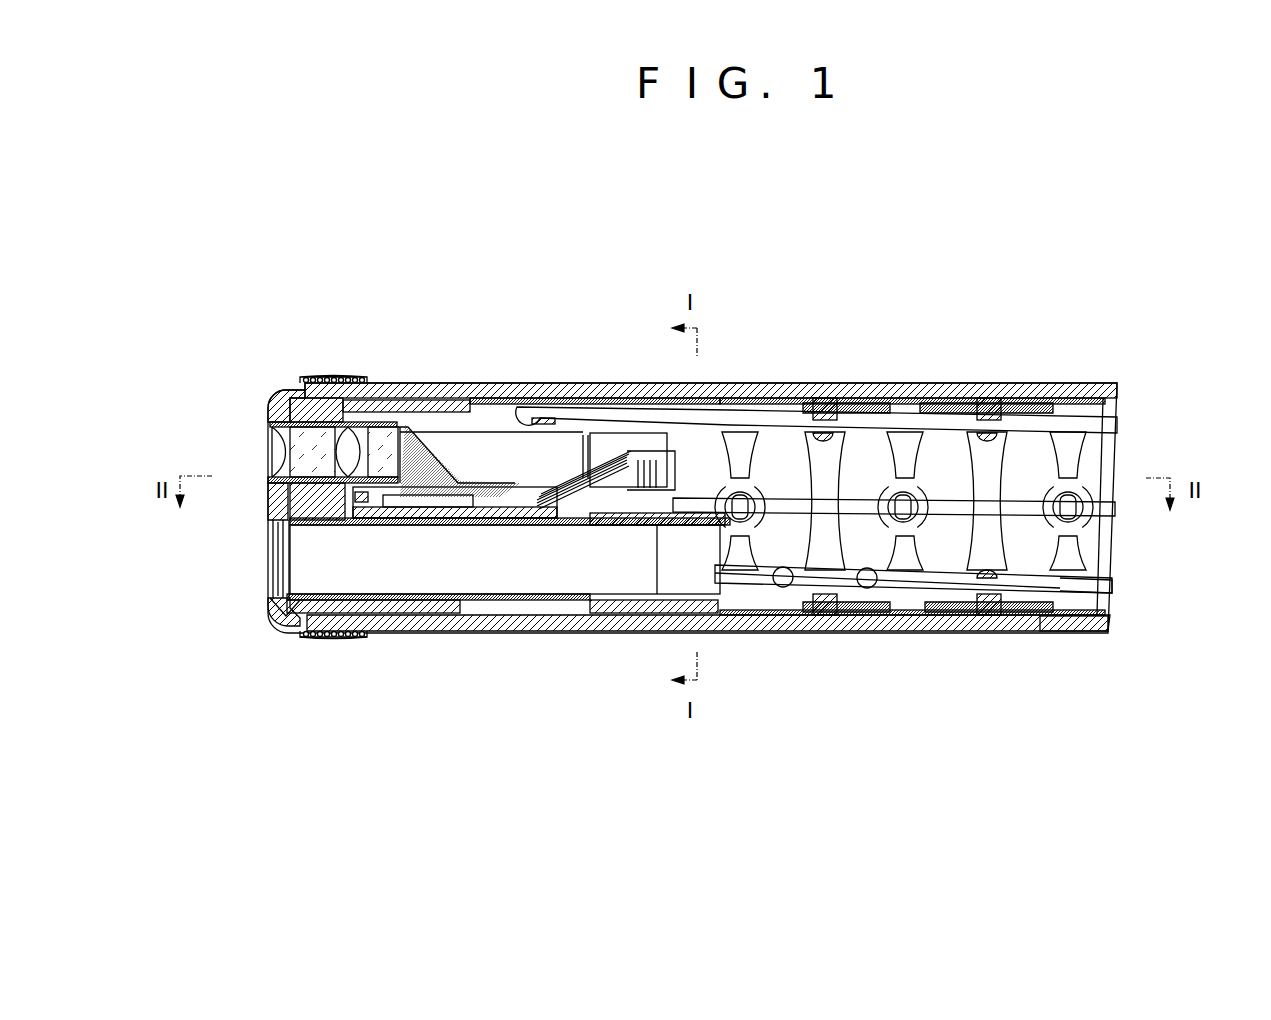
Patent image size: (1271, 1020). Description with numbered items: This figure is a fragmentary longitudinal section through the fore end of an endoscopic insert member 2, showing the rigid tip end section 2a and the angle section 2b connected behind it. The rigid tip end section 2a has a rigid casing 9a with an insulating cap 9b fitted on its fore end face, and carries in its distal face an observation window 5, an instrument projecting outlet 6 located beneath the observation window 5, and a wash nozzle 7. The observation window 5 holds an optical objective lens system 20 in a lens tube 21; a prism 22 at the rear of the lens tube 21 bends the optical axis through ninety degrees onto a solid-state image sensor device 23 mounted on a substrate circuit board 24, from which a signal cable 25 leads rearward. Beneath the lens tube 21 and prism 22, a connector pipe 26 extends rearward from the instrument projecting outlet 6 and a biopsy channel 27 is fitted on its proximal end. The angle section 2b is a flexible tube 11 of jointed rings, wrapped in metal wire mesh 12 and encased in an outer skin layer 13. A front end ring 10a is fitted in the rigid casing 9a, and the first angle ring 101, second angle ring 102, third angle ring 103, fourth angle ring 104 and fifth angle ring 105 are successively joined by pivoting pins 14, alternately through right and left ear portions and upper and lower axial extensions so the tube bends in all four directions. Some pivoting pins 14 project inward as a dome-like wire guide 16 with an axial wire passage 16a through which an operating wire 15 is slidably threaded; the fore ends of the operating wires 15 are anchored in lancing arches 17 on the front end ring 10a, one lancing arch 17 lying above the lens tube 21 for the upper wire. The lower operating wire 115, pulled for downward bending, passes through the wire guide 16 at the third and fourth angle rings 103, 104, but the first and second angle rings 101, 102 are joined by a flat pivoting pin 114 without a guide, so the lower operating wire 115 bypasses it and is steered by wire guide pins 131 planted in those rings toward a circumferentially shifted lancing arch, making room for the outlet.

The insert member 2 is at (898, 264).
The rigid tip end section 2a is at (292, 632).
The angle section 2b is at (1069, 380).
The observation window 5 is at (268, 443).
The instrument projecting outlet 6 is at (273, 611).
The wash nozzle 7 is at (265, 562).
The rigid casing 9a is at (347, 640).
The insulating cap 9b is at (275, 516).
The front end ring 10a is at (637, 397).
The flexible tube 11 is at (735, 620).
The first angle ring 101 is at (770, 616).
The second angle ring 102 is at (870, 616).
The third angle ring 103 is at (943, 413).
The fourth angle ring 104 is at (1033, 413).
The fifth angle ring 105 is at (1108, 414).
The metal wire mesh 12 is at (1068, 618).
The outer skin layer 13 is at (1093, 624).
The pivoting pin 14 is at (828, 400).
The flat pivoting pin 114 is at (818, 616).
The operating wire 15 is at (1108, 425).
The lower operating wire 115 is at (1100, 590).
The wire guide 16 is at (1070, 498).
The wire passage 16a is at (812, 425).
The lancing arch 17 is at (542, 417).
The optical objective lens system 20 is at (347, 443).
The lens tube 21 is at (288, 438).
The prism 22 is at (420, 443).
The solid-state image sensor device 23 is at (445, 498).
The substrate circuit board 24 is at (455, 522).
The signal cable 25 is at (620, 520).
The connector pipe 26 is at (483, 616).
The biopsy channel 27 is at (665, 606).
The wire guide pin 131 is at (770, 432).